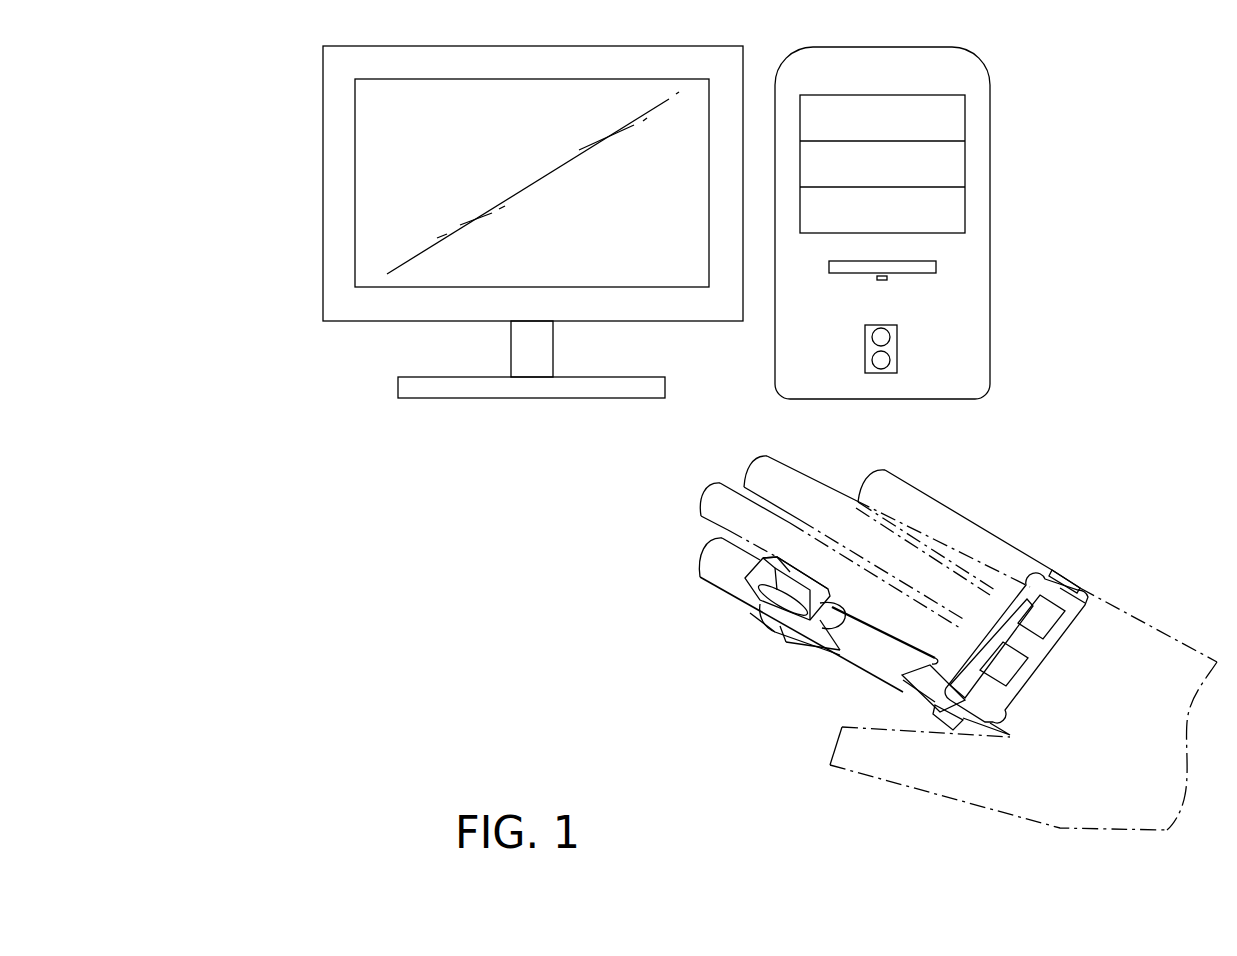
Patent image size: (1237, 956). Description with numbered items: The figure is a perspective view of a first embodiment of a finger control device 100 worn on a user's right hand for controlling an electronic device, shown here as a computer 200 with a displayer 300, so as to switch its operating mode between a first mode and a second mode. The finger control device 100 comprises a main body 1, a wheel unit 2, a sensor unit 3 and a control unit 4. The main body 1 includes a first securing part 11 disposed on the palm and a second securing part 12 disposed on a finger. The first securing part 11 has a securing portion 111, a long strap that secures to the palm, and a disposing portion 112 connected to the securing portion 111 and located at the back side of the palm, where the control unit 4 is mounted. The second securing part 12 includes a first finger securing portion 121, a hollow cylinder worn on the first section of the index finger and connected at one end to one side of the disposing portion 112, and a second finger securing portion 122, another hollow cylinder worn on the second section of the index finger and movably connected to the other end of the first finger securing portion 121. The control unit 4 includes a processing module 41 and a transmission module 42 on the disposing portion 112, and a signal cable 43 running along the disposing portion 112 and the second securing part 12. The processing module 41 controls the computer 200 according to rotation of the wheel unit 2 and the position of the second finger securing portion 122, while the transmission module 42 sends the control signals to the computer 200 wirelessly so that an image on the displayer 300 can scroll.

The finger control device 100 is at (1087, 535).
The computer 200 is at (990, 203).
The displayer 300 is at (323, 203).
The main body 1 is at (932, 630).
The first securing part 11 is at (1088, 592).
The securing portion 111 is at (943, 715).
The disposing portion 112 is at (1080, 608).
The second securing part 12 is at (870, 622).
The first finger securing portion 121 is at (855, 650).
The second finger securing portion 122 is at (773, 617).
The wheel unit 2 is at (788, 553).
The sensor unit 3 is at (787, 643).
The control unit 4 is at (1035, 660).
The processing module 41 is at (997, 670).
The transmission module 42 is at (1043, 620).
The signal cable 43 is at (930, 670).